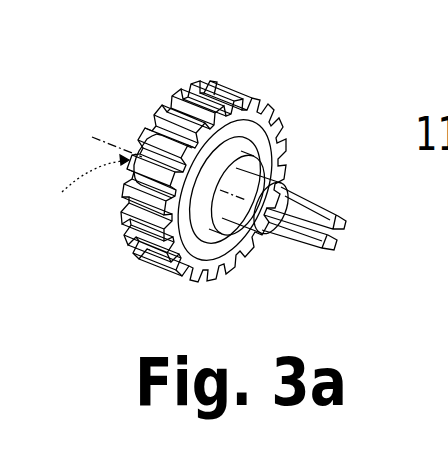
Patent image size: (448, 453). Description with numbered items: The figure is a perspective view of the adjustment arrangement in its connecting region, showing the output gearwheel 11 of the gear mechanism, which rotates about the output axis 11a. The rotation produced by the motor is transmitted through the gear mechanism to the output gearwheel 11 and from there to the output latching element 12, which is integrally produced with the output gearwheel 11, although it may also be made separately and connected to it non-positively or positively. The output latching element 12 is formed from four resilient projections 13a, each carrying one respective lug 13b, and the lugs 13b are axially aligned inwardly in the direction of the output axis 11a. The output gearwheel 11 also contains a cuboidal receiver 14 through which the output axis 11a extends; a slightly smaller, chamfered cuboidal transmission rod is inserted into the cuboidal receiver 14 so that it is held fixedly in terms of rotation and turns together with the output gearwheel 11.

The output gearwheel 11 is at (213, 88).
The output axis 11a is at (115, 148).
The output latching element 12 is at (300, 188).
The resilient projections 13a is at (297, 247).
The lugs 13b is at (397, 218).
The cuboidal receiver 14 is at (88, 199).